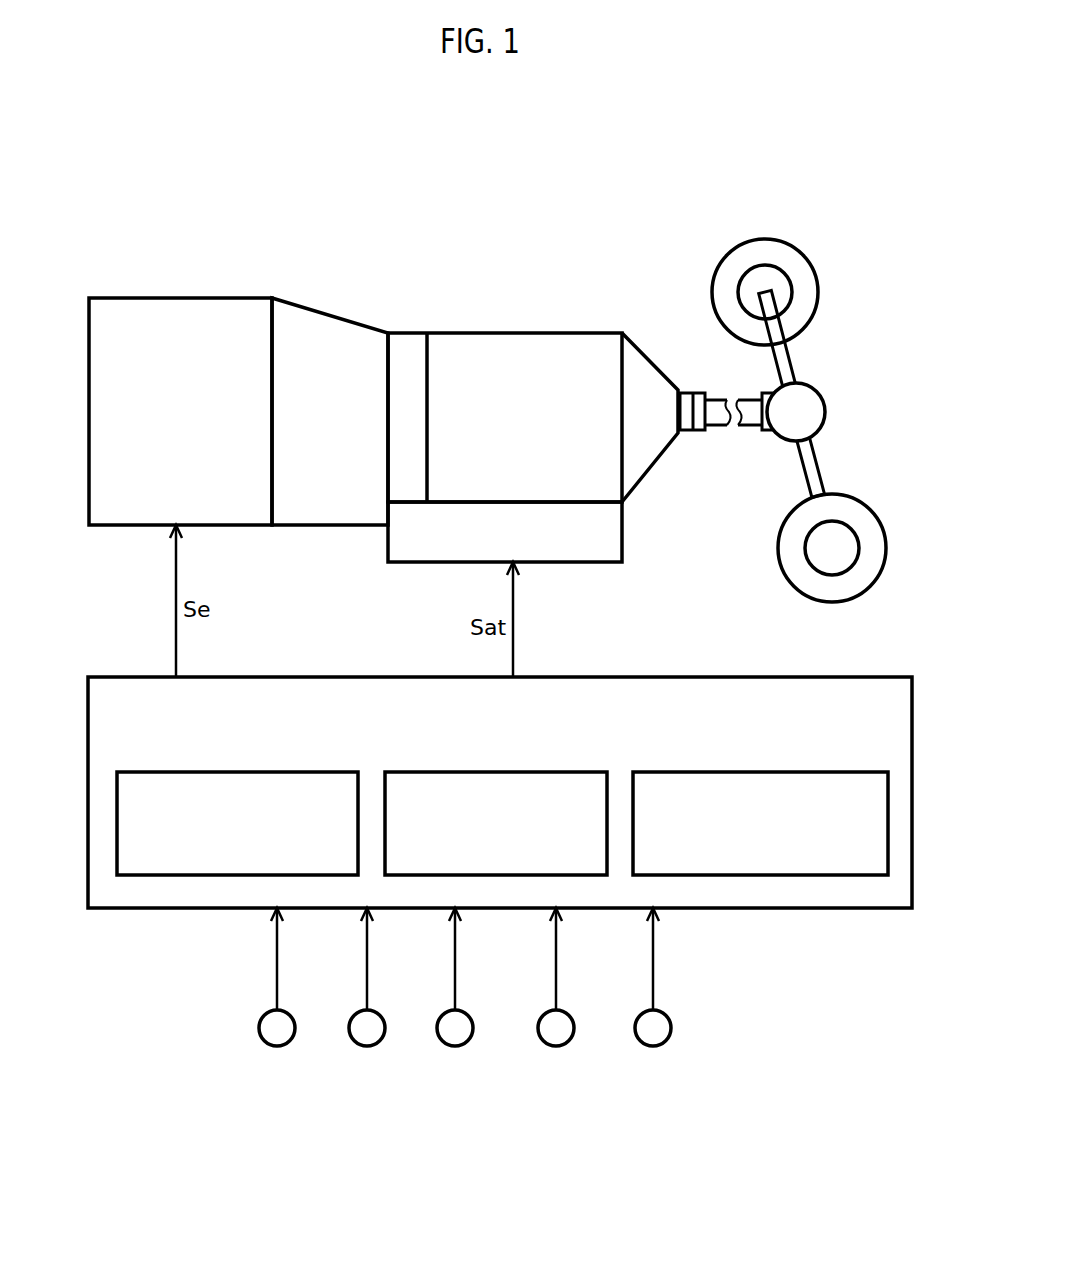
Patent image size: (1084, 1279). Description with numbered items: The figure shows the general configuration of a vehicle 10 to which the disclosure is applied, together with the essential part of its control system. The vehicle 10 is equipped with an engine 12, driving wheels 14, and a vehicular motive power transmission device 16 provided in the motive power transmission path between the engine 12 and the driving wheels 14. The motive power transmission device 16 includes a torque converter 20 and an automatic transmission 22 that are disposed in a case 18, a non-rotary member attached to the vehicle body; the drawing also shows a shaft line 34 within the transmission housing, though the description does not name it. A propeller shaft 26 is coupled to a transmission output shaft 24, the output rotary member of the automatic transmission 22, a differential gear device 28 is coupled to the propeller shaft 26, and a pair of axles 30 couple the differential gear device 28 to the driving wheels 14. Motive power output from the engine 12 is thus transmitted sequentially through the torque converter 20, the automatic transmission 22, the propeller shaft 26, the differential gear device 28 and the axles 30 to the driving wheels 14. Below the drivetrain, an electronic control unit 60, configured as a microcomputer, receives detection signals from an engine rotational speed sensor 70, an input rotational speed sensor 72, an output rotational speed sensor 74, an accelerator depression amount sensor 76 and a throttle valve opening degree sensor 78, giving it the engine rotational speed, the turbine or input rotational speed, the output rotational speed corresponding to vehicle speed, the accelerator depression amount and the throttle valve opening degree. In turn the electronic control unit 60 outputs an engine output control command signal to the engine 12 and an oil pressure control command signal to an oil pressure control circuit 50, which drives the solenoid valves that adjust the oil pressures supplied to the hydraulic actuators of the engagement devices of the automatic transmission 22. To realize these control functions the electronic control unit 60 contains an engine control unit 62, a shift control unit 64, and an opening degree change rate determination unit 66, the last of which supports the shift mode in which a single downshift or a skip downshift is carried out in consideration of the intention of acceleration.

The vehicle 10 is at (614, 150).
The engine 12 is at (198, 312).
The driving wheels 14 is at (767, 247).
The vehicular motive power transmission device 16 is at (452, 232).
The case 18 is at (640, 483).
The torque converter 20 is at (297, 318).
The automatic transmission 22 is at (503, 340).
The transmission output shaft 24 is at (683, 395).
The propeller shaft 26 is at (745, 417).
The differential gear device 28 is at (807, 408).
The axles 30 is at (787, 363).
The input shaft 34 is at (402, 340).
The oil pressure control circuit 50 is at (582, 553).
The electronic control unit 60 is at (840, 708).
The engine control unit 62 is at (290, 780).
The shift control unit 64 is at (550, 780).
The opening degree change rate determination unit 66 is at (822, 778).
The engine rotational speed sensor 70 is at (277, 1040).
The input rotational speed sensor 72 is at (367, 1040).
The output rotational speed sensor 74 is at (455, 1040).
The accelerator depression amount sensor 76 is at (556, 1040).
The throttle valve opening degree sensor 78 is at (653, 1040).